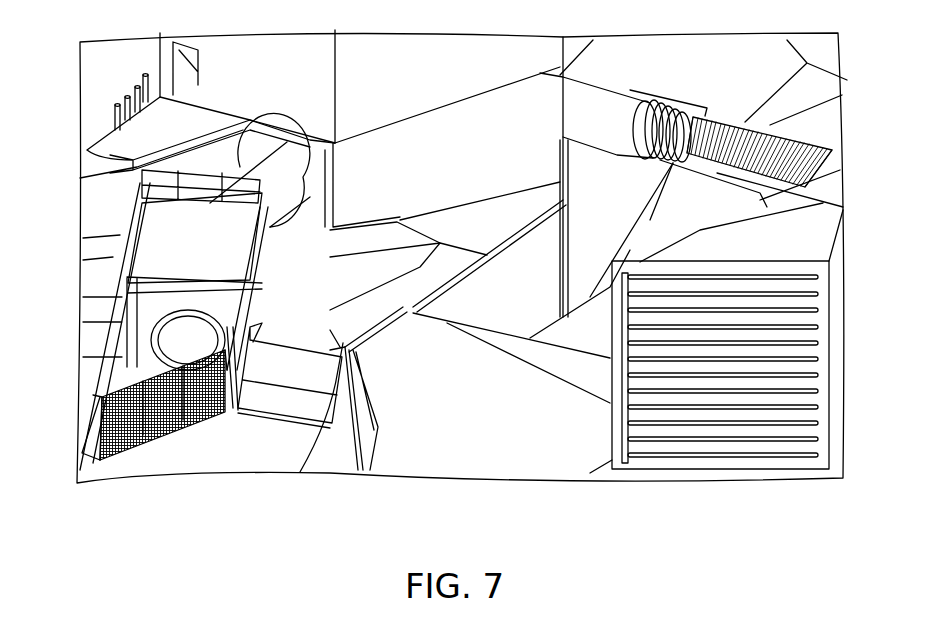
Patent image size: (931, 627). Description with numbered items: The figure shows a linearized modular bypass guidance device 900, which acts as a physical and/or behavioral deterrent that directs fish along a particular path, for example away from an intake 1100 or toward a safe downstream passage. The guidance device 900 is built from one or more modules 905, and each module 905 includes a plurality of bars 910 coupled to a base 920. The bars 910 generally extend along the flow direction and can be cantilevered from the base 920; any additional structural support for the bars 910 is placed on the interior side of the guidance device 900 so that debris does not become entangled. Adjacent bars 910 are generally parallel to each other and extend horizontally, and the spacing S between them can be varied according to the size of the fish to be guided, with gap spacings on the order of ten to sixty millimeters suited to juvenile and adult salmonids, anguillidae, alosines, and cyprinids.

The linearized modular bypass guidance device 900 is at (150, 367).
The module 905 is at (800, 272).
The bar 910 is at (223, 412).
The base 920 is at (207, 412).
The intake 1100 is at (177, 317).
The spacing S is at (225, 413).